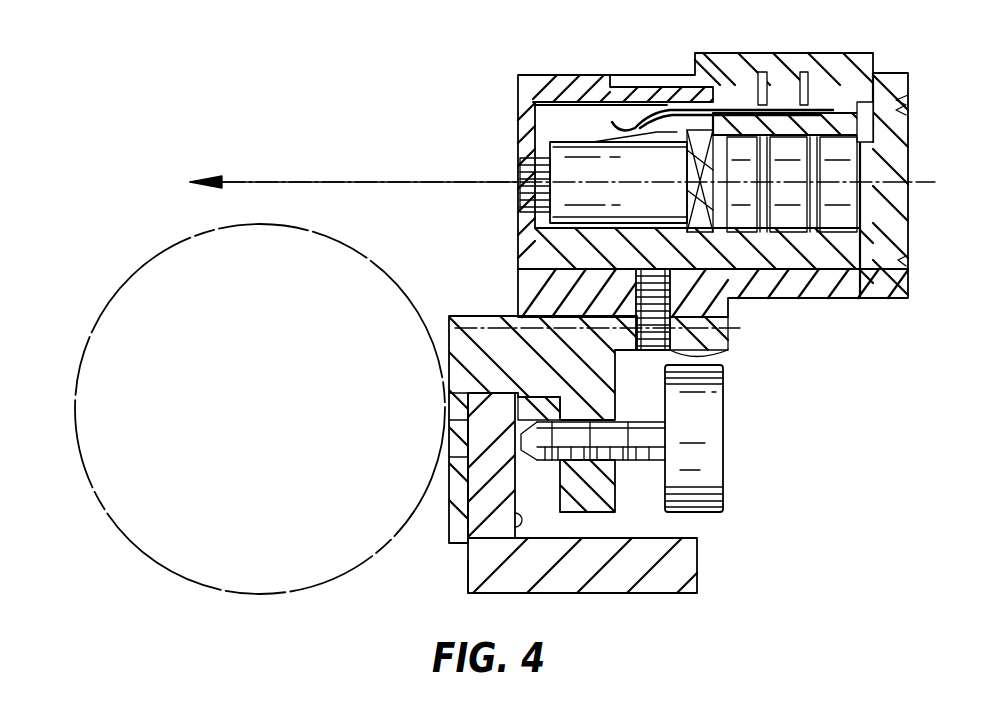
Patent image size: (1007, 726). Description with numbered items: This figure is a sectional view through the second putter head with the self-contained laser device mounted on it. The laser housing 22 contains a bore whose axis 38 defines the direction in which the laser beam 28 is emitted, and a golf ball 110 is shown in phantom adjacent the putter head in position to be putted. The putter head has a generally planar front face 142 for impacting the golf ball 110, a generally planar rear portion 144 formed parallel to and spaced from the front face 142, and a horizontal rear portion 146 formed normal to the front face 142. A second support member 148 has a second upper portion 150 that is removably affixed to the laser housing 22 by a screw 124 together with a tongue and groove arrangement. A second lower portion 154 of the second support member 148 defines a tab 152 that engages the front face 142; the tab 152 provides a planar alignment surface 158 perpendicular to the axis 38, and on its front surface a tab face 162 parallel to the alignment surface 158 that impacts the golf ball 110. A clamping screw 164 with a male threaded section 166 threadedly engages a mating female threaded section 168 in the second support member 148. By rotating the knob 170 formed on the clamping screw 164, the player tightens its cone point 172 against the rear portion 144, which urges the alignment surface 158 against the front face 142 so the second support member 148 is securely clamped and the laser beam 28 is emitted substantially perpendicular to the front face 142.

The laser housing 22 is at (518, 92).
The axis 38 is at (343, 182).
The laser beam 28 is at (402, 182).
The golf ball 110 is at (158, 255).
The second support member 148 is at (490, 315).
The second upper portion 150 is at (449, 330).
The tab face 162 is at (462, 400).
The tab 152 is at (466, 420).
The alignment surface 158 is at (466, 457).
The cone point 172 is at (512, 447).
The second lower portion 154 is at (449, 488).
The rear portion 144 is at (515, 513).
The front face 142 is at (468, 572).
The screw 124 is at (723, 348).
The knob 170 is at (723, 376).
The clamping screw 164 is at (705, 434).
The male threaded section 166 is at (617, 464).
The female threaded section 168 is at (623, 487).
The horizontal rear portion 146 is at (697, 577).